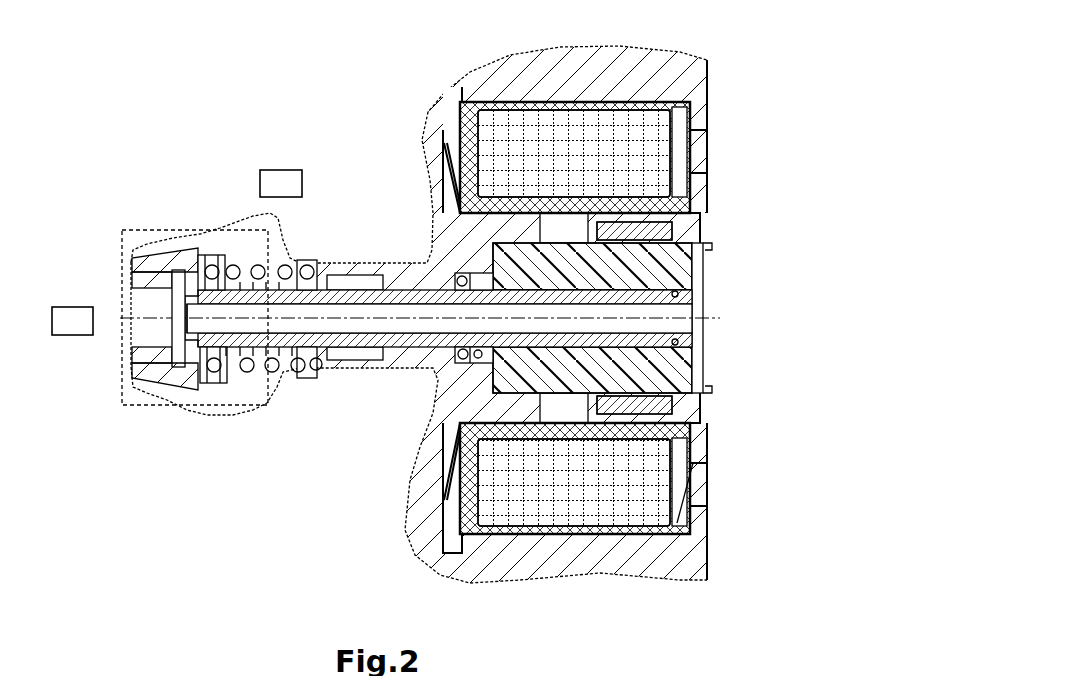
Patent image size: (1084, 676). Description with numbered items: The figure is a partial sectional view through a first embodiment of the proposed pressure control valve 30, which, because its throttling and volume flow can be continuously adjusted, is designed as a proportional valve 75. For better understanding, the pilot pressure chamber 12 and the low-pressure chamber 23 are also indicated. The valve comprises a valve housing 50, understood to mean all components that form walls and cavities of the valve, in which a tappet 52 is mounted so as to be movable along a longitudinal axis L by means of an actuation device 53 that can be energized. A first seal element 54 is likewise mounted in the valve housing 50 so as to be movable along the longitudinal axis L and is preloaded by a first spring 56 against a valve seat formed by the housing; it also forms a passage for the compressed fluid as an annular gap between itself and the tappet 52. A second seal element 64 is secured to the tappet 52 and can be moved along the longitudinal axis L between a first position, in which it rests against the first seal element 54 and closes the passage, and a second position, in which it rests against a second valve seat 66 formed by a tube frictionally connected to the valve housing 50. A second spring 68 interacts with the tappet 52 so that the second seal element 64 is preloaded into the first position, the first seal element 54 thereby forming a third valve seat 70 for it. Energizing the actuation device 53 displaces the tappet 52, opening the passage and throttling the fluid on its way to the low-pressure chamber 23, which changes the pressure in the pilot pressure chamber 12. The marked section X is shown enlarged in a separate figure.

The pilot pressure chamber 12 is at (68, 305).
The low-pressure chamber 23 is at (280, 168).
The pressure control valve 30 is at (803, 67).
The proportional valve 75 is at (789, 196).
The valve housing 50 is at (403, 270).
The tappet 52 is at (333, 345).
The actuation device 53 is at (687, 120).
The first seal element 54 is at (213, 253).
The third valve seat 70 is at (222, 275).
The first spring 56 is at (260, 262).
The second seal element 64 is at (205, 348).
The second valve seat 66 is at (187, 343).
The second spring 68 is at (463, 355).
The section X is at (138, 407).
The longitudinal axis L is at (378, 315).